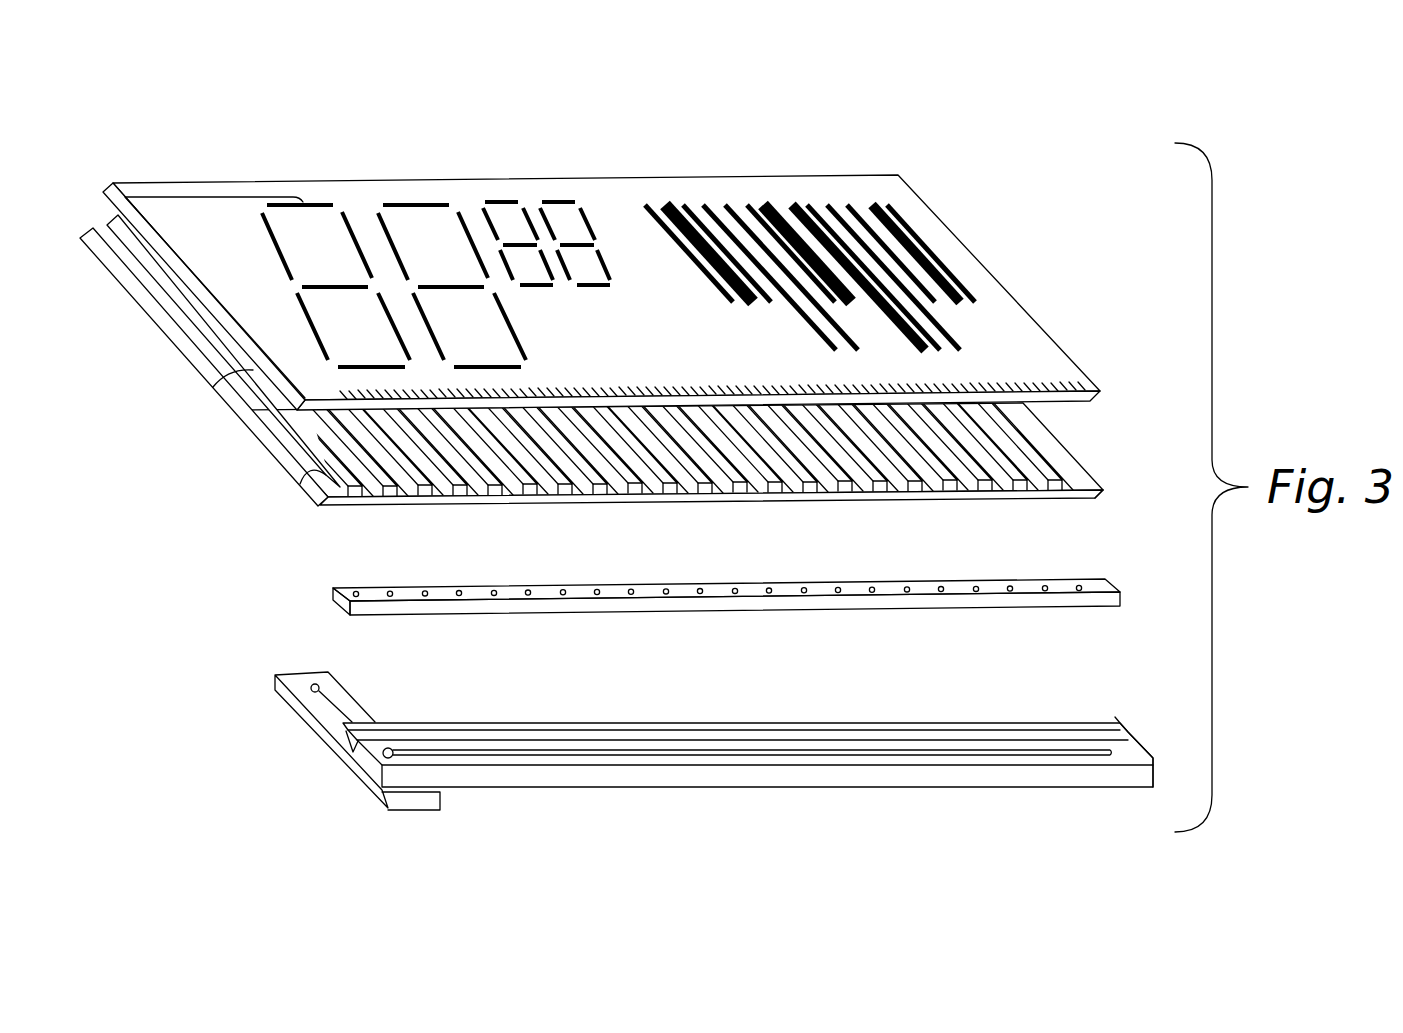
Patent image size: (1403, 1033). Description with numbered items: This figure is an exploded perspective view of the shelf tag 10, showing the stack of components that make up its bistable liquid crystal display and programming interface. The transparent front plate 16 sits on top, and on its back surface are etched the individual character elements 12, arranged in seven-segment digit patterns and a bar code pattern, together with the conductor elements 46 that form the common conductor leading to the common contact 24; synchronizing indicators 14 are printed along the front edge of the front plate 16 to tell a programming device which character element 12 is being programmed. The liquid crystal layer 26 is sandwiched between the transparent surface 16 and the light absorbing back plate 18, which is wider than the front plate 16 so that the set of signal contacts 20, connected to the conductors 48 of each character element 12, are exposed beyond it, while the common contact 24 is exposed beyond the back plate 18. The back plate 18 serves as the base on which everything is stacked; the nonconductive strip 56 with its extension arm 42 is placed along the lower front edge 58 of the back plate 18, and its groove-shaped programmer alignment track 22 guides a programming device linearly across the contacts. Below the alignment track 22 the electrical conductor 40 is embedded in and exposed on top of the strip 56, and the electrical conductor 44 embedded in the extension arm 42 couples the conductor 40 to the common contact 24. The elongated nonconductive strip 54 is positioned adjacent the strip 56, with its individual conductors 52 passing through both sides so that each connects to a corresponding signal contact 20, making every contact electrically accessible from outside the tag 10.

The shelf tag 10 is at (908, 125).
The character elements 12 is at (427, 203).
The synchronizing indicators 14 is at (1045, 388).
The transparent surface 16 is at (165, 183).
The light absorbing surface 18 is at (146, 300).
The signal contacts 20 is at (1052, 478).
The programmer alignment track 22 is at (748, 717).
The common contact 24 is at (218, 392).
The liquid crystal layer 26 is at (612, 205).
The electrical conductor 40 is at (640, 747).
The extension arm 42 is at (357, 716).
The electrical conductor 44 is at (315, 684).
The conductor elements 46 is at (218, 197).
The conductors 48 is at (765, 485).
The individual conductors 52 is at (1040, 588).
The elongated nonconductive strip 54 is at (731, 570).
The nonconductive strip 56 is at (1125, 745).
The lower front edge 58 is at (312, 474).